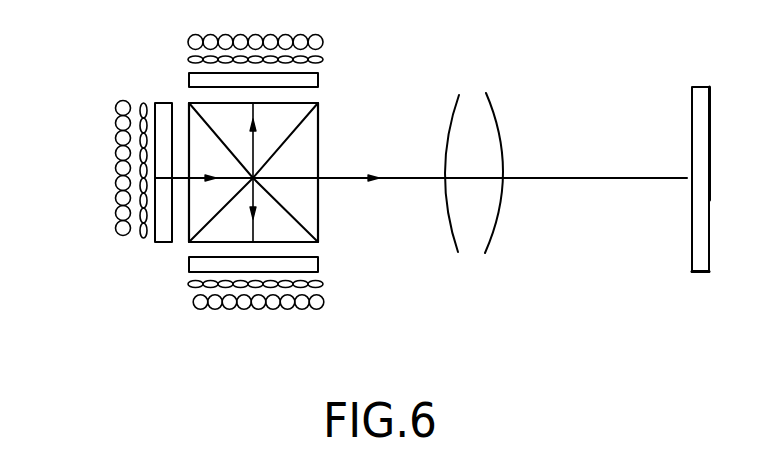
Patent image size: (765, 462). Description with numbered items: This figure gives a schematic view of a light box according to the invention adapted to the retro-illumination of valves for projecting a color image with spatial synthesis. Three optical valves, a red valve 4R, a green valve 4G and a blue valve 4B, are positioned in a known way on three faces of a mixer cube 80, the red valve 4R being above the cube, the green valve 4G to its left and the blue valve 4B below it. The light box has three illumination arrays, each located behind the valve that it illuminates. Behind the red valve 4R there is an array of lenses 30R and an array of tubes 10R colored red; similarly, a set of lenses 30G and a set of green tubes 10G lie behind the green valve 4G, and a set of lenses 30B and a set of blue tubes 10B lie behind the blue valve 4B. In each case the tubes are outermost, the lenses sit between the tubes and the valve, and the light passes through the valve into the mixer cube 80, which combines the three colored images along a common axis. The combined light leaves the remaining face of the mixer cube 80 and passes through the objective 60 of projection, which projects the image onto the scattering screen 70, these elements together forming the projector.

The array of red tubes 10R is at (317, 43).
The array of lenses for red illumination 30R is at (325, 62).
The red valve 4R is at (318, 80).
The array of green tubes 10G is at (120, 232).
The array of lenses for green illumination 30G is at (143, 103).
The green valve 4G is at (167, 242).
The array of blue tubes 10B is at (252, 313).
The array of lenses for blue illumination 30B is at (326, 285).
The blue valve 4B is at (318, 264).
The mixer cube 80 is at (302, 193).
The objective of projection 60 is at (493, 110).
The scattering screen 70 is at (698, 265).